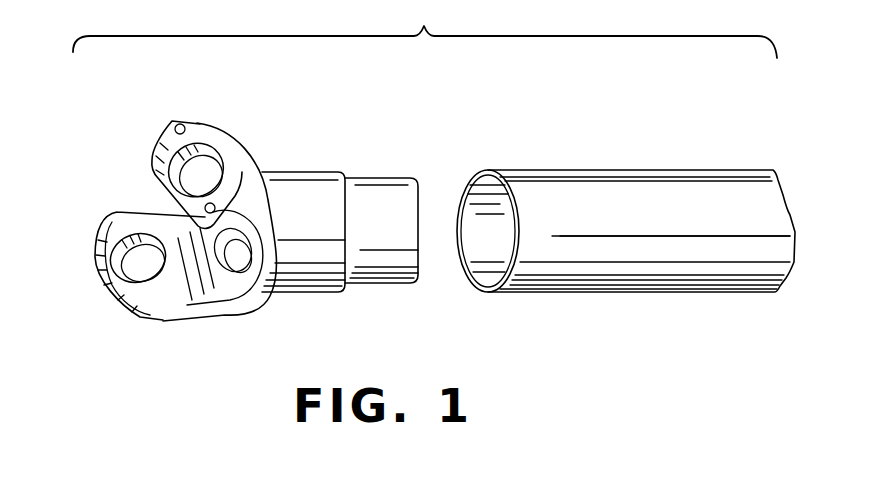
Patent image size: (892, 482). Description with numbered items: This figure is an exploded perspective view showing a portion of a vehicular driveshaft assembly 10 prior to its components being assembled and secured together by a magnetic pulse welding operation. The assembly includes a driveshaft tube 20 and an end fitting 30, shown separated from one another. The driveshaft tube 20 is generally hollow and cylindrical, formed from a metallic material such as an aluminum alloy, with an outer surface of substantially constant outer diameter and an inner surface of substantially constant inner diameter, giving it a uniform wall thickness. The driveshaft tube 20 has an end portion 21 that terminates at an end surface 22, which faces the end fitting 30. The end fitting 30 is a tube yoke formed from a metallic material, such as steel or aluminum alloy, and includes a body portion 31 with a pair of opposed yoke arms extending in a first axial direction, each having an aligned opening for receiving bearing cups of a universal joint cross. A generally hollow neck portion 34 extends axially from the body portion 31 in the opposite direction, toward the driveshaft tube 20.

The vehicular driveshaft assembly 10 is at (425, 29).
The driveshaft tube 20 is at (624, 168).
The end portion 21 is at (577, 265).
The end surface 22 is at (482, 291).
The end fitting 30 is at (238, 345).
The body portion 31 is at (280, 190).
The neck portion 34 is at (380, 260).